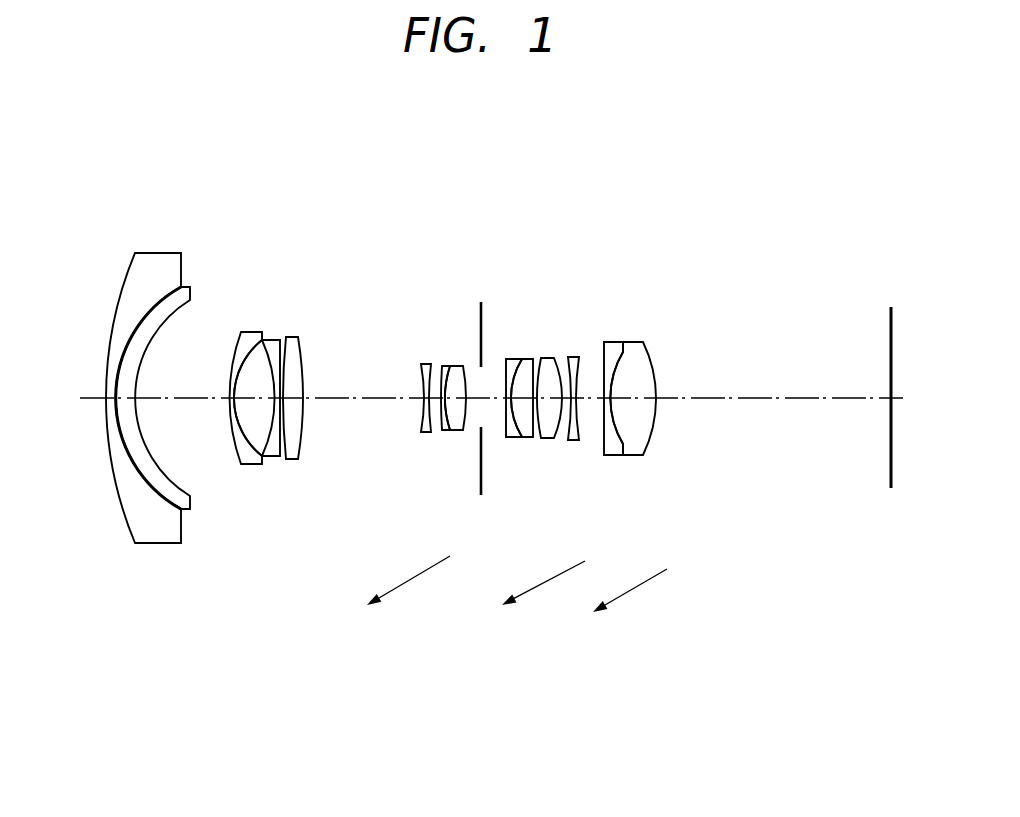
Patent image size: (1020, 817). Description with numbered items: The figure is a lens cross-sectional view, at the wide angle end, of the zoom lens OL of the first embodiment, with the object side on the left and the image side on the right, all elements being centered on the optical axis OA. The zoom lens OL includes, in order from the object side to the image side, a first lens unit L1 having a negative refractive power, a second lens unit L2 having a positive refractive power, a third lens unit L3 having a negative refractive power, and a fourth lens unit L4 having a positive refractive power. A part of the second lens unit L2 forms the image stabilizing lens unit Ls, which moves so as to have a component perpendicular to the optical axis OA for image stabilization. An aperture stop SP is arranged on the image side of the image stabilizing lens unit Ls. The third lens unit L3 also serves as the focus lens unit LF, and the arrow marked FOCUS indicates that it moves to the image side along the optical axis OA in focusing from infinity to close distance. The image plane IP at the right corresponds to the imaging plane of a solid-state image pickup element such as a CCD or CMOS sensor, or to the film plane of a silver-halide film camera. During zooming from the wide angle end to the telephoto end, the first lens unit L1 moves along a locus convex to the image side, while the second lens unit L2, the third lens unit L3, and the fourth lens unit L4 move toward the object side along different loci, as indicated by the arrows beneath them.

The zoom lens OL is at (680, 167).
The optical axis OA is at (473, 399).
The first lens unit L1 is at (328, 558).
The second lens unit L2 is at (479, 380).
The image stabilizing lens unit Ls is at (442, 340).
The aperture stop SP is at (470, 299).
The third lens unit L3 is at (578, 451).
The focus lens unit LF is at (593, 472).
The fourth lens unit L4 is at (660, 473).
The focus movement arrow FOCUS is at (572, 352).
The image plane IP is at (879, 303).